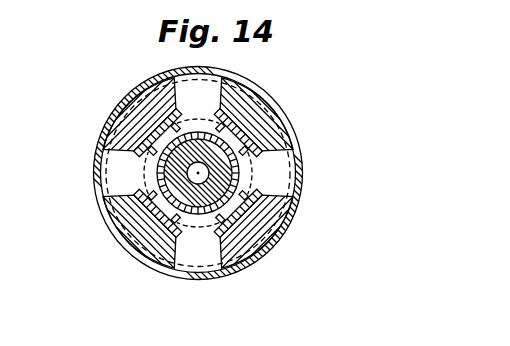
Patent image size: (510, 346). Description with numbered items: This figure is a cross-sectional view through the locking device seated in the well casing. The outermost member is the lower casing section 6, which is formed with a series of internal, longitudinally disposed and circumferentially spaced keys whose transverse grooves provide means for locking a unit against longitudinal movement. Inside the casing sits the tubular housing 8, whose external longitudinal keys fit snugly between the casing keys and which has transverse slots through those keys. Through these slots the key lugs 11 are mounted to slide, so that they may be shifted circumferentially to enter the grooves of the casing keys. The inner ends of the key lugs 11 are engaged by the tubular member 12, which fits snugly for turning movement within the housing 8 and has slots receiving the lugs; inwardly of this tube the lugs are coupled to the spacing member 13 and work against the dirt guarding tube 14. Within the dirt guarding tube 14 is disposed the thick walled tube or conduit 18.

The lower casing section 6 is at (140, 258).
The tubular housing 8 is at (140, 210).
The key lugs 11 is at (121, 171).
The tubular member 12 is at (250, 129).
The spacing member 13 is at (150, 133).
The dirt guarding tube 14 is at (174, 176).
The thick walled tube or conduit 18 is at (128, 207).